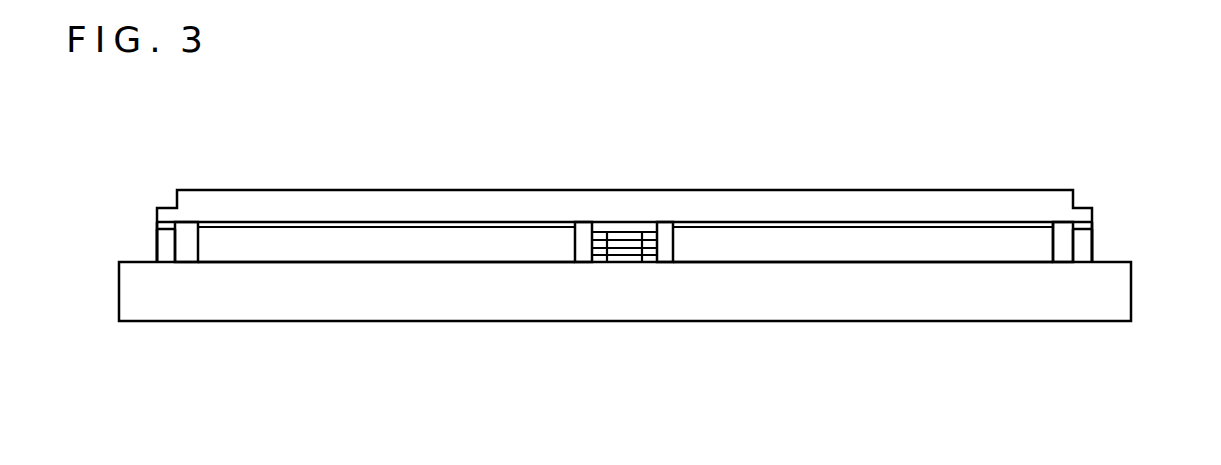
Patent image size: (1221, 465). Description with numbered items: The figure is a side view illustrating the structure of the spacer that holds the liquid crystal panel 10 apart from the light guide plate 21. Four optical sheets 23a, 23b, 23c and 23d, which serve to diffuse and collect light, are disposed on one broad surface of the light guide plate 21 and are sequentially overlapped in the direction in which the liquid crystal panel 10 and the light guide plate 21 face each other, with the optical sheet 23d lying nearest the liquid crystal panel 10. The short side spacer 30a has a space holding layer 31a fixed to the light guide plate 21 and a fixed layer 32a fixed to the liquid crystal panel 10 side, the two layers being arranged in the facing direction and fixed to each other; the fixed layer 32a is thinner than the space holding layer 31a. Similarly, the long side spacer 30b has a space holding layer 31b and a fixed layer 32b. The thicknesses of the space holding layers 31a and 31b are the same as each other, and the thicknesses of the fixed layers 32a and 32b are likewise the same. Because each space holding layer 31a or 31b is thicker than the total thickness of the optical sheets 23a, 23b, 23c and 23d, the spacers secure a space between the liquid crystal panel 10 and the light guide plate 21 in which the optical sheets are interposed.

The liquid crystal panel 10 is at (772, 198).
The light guide plate 21 is at (841, 308).
The optical sheet 23a is at (650, 257).
The optical sheet 23b is at (655, 248).
The optical sheet 23c is at (653, 242).
The optical sheet 23d is at (648, 237).
The short side spacer 30a is at (149, 239).
The long side spacer 30b is at (1056, 247).
The space holding layer 31a is at (162, 255).
The space holding layer 31b is at (365, 255).
The fixed layer 32a is at (158, 225).
The fixed layer 32b is at (342, 222).